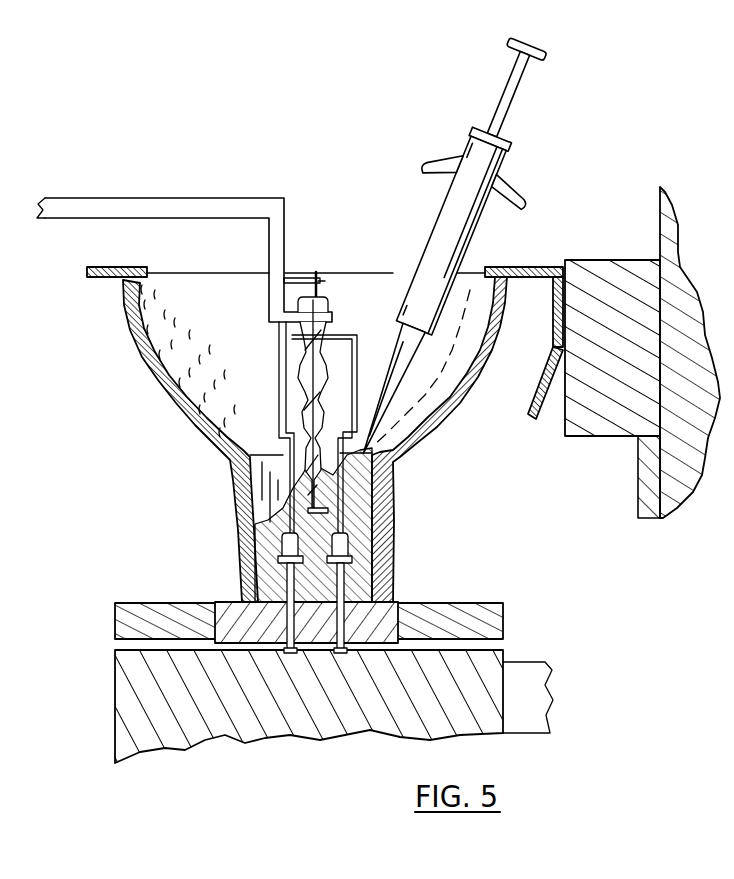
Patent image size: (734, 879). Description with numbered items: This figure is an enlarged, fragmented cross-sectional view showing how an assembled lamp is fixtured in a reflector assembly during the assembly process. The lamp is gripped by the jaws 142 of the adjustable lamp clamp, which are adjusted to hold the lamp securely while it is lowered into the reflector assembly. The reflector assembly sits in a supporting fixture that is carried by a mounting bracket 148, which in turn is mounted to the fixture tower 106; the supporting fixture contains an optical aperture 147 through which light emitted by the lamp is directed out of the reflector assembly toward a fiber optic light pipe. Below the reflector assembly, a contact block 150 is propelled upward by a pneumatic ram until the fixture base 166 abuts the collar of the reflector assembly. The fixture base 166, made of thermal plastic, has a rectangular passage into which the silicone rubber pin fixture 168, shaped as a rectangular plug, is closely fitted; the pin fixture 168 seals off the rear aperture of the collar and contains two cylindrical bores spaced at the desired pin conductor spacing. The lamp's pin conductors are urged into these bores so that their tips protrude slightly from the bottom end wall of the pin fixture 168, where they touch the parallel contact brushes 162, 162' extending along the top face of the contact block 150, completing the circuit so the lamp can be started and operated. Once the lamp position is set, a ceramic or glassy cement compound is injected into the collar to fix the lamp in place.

The fixture tower 106 is at (657, 213).
The jaws 142 is at (173, 196).
The optical aperture 147 is at (190, 262).
The mounting bracket 148 is at (618, 437).
The contact block 150 is at (110, 668).
The contact brush 162 is at (370, 615).
The contact brush 162' is at (271, 615).
The fixture base 166 is at (114, 608).
The pin fixture 168 is at (227, 600).